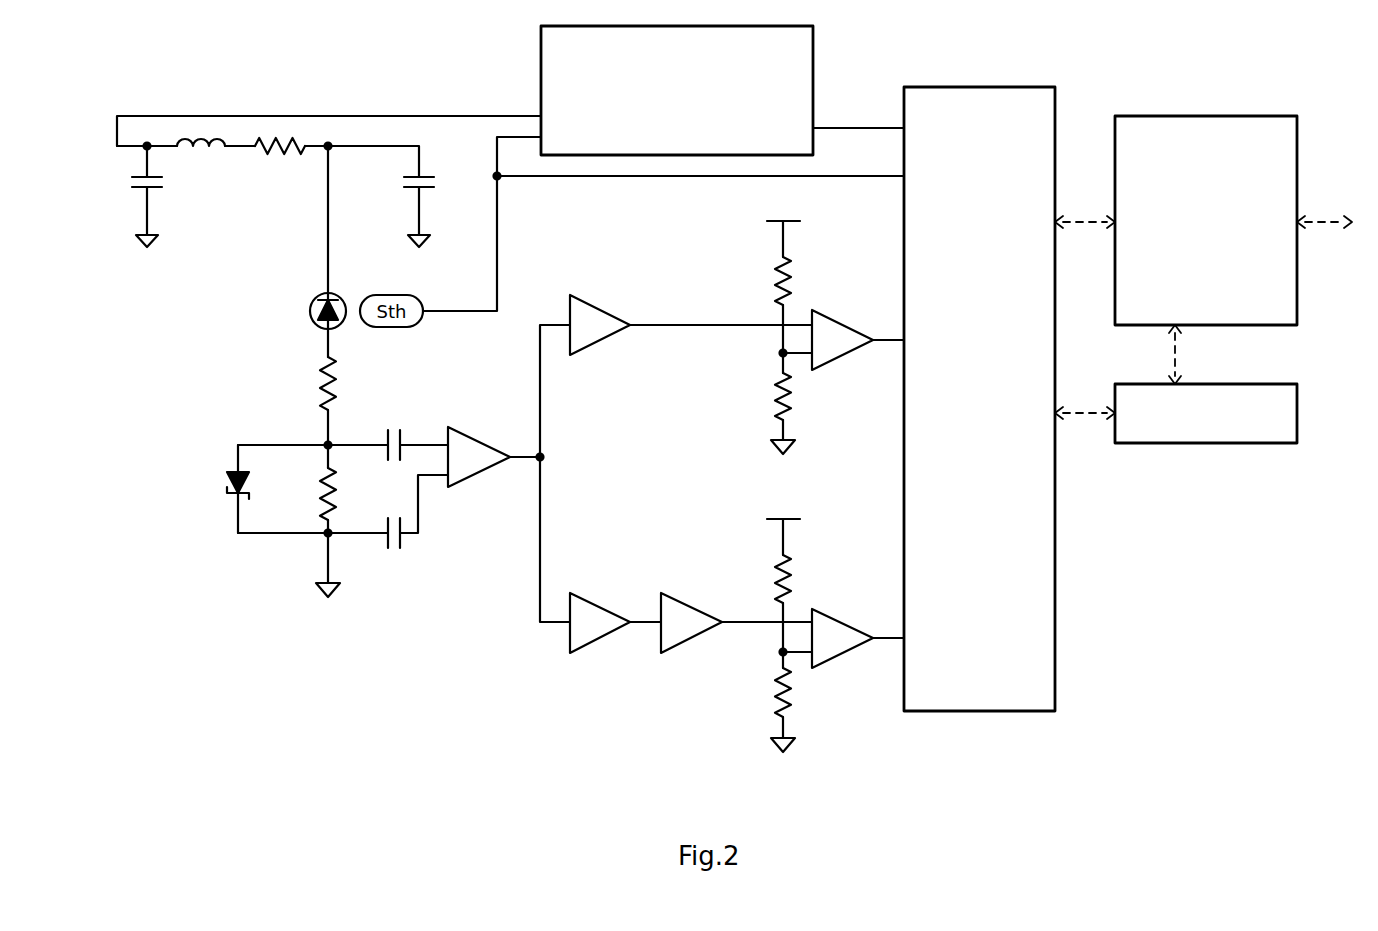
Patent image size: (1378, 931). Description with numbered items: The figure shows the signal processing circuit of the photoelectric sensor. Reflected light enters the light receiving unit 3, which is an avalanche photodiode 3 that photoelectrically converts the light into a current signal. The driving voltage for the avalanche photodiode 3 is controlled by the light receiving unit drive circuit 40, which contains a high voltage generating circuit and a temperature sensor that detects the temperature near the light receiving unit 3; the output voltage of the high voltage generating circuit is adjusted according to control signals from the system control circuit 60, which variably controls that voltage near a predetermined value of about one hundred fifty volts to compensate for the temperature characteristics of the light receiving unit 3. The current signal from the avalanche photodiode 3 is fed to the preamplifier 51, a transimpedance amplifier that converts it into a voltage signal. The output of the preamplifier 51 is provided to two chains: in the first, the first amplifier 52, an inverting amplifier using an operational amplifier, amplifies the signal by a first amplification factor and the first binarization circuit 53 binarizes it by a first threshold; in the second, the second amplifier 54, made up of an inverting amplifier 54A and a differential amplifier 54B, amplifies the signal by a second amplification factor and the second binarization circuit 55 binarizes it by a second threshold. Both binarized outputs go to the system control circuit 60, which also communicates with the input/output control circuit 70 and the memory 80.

The light receiving unit 3 is at (305, 309).
The light receiving unit drive circuit 40 is at (677, 90).
The preamplifier 51 is at (468, 440).
The first amplifier 52 is at (598, 312).
The first binarization circuit 53 is at (840, 328).
The second amplifier 54 is at (647, 576).
The inverting amplifier AMP2 54A is at (595, 605).
The differential amplifier AMP3 54B is at (692, 608).
The second binarization circuit 55 is at (838, 622).
The system control circuit 60 is at (979, 399).
The input/output control circuit 70 is at (1206, 220).
The memory 80 is at (1206, 413).